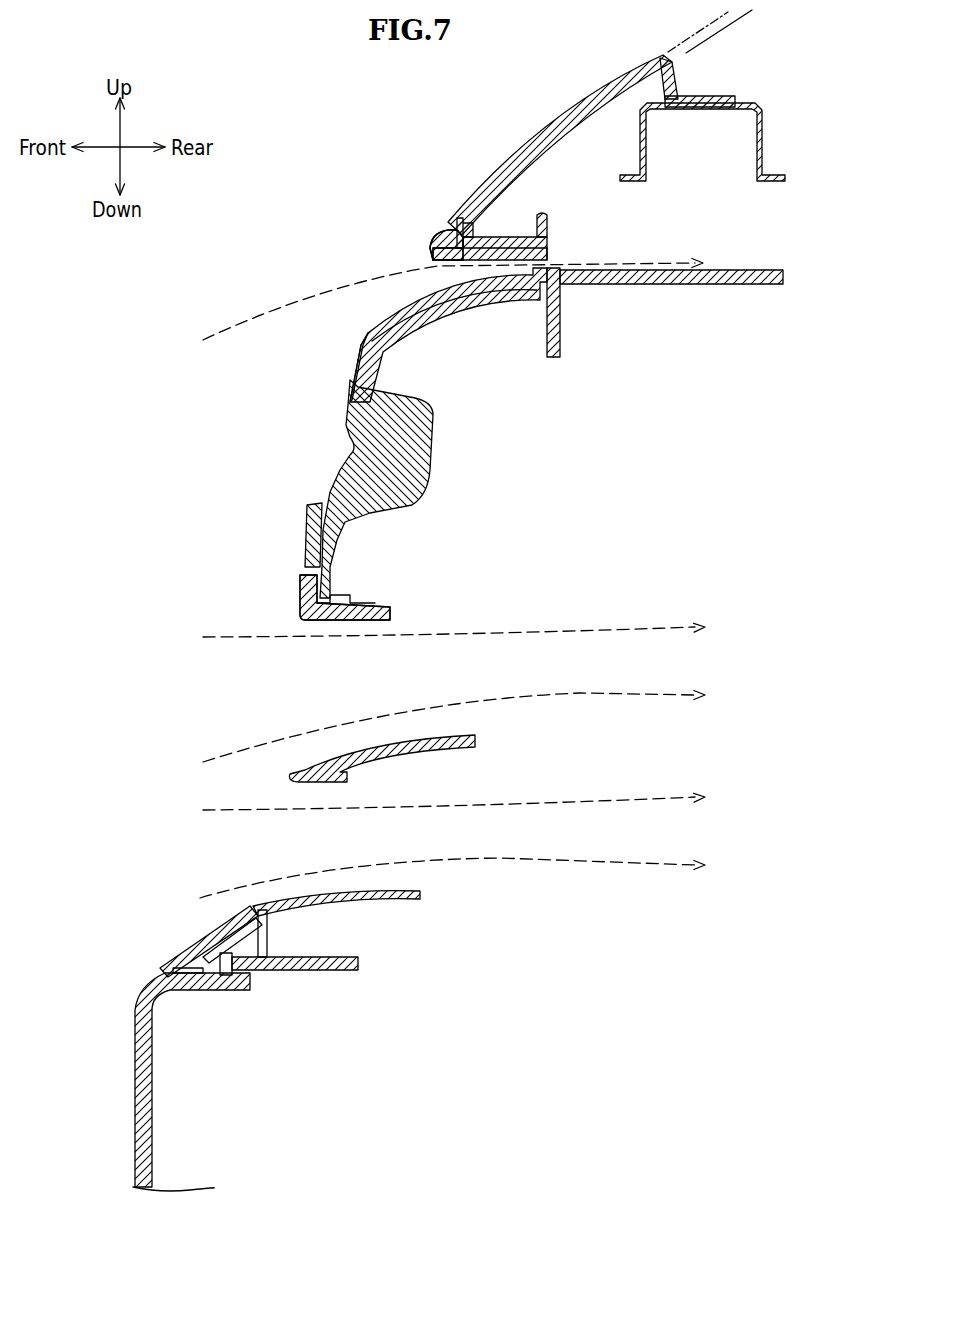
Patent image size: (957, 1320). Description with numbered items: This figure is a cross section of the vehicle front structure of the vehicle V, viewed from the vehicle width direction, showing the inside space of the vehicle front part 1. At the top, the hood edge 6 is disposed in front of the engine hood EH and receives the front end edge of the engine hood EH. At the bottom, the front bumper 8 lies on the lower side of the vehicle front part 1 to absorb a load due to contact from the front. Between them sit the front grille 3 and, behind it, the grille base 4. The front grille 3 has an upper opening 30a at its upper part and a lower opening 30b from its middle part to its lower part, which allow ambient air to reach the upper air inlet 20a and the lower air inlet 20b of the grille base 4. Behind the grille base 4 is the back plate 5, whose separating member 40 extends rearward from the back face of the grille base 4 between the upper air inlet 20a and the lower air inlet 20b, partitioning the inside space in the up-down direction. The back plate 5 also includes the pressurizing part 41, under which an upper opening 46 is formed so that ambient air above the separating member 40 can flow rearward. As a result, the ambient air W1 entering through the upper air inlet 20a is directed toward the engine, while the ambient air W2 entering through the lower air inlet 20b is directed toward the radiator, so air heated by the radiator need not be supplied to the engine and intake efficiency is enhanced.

The vehicle front part 1 is at (327, 140).
The vehicle V is at (387, 133).
The engine hood EH is at (670, 46).
The hood edge 6 is at (542, 137).
The pressurizing part 41 is at (507, 235).
The upper opening 46 is at (560, 257).
The ambient air W1 is at (643, 263).
The separating member 40 is at (620, 288).
The back plate 5 is at (707, 286).
The front grille 3 is at (354, 366).
The grille base 4 is at (437, 448).
The upper intake inlet 20a is at (420, 260).
The upper opening 30a is at (446, 245).
The lower intake inlet 20b is at (265, 620).
The lower opening 30b is at (345, 597).
The ambient air W2 is at (580, 633).
The front bumper 8 is at (137, 1048).